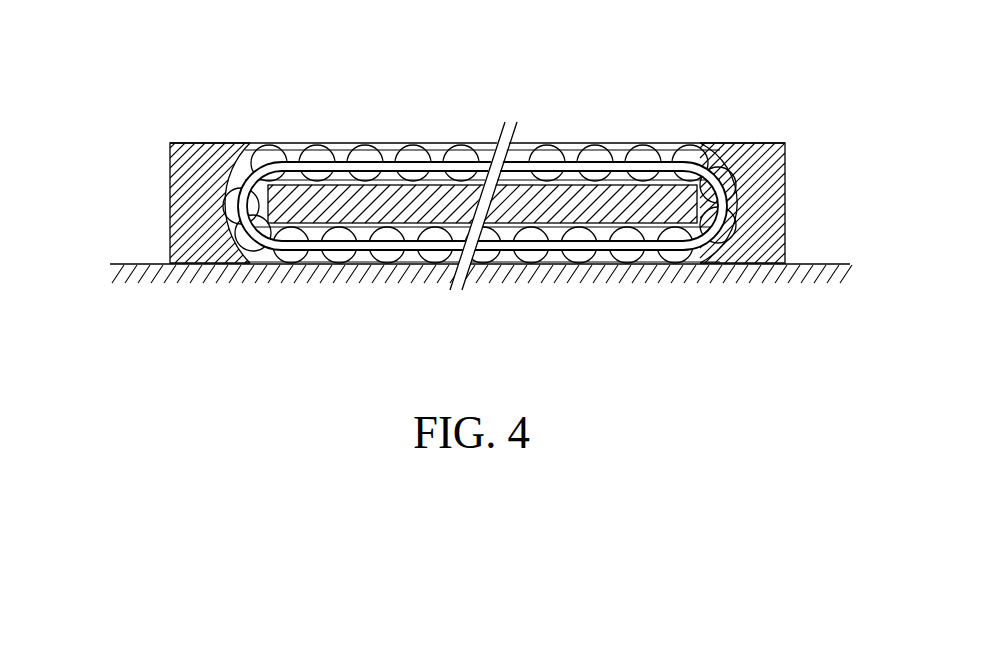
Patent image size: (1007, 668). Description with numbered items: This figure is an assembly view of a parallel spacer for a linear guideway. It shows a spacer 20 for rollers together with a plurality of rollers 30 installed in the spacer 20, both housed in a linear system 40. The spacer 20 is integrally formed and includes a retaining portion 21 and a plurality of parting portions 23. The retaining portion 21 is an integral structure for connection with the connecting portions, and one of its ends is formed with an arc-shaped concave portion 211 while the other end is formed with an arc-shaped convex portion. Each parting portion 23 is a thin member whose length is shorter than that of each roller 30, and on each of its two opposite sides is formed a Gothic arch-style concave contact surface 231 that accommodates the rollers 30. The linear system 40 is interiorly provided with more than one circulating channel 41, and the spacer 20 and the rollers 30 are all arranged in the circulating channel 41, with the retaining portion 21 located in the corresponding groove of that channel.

The spacer 20 is at (235, 209).
The retaining portion 21 is at (458, 165).
The arc-shaped concave portion 211 is at (558, 243).
The parting portions 23 is at (338, 157).
The Gothic arch-style concave contact surface 231 is at (565, 147).
The rollers 30 is at (252, 150).
The linear system 40 is at (168, 143).
The circulating channel 41 is at (715, 162).